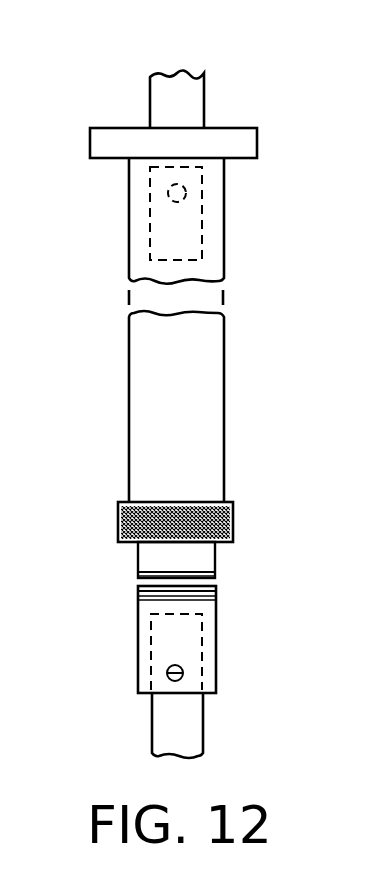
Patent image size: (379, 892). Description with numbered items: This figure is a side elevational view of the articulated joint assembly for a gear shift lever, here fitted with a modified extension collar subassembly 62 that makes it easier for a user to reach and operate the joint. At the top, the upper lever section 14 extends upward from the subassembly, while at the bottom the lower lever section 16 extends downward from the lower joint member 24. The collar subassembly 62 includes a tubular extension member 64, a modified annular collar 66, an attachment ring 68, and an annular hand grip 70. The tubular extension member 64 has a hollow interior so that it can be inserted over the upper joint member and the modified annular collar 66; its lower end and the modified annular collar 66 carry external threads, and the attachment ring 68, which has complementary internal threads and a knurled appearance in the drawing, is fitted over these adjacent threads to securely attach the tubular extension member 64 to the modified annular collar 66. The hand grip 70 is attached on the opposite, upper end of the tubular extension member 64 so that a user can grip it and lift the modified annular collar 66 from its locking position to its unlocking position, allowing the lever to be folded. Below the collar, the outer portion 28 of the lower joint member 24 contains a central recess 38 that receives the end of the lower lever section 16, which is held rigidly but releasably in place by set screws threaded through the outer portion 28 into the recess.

The upper lever section 14 is at (197, 102).
The annular hand grip 70 is at (257, 143).
The modified extension collar subassembly 62 is at (256, 227).
The tubular extension member 64 is at (225, 232).
The attachment ring 68 is at (237, 517).
The modified annular collar 66 is at (223, 559).
The outer portion of lower joint member 28 is at (217, 612).
The lower joint member 24 is at (224, 643).
The central recess 38 is at (230, 674).
The lower lever section 16 is at (203, 728).